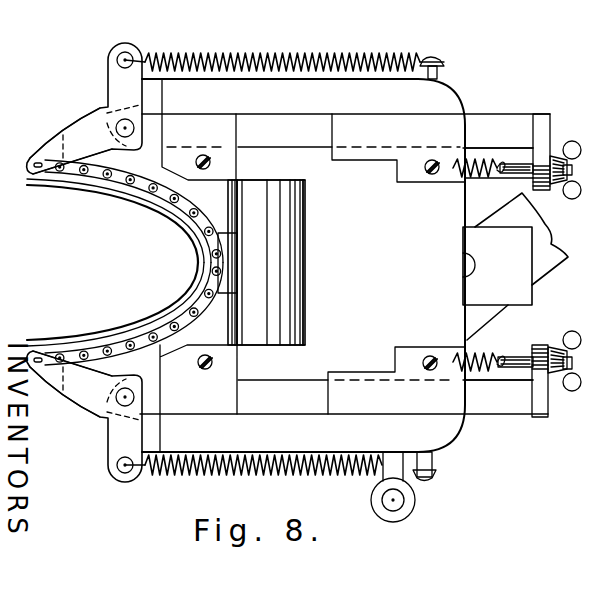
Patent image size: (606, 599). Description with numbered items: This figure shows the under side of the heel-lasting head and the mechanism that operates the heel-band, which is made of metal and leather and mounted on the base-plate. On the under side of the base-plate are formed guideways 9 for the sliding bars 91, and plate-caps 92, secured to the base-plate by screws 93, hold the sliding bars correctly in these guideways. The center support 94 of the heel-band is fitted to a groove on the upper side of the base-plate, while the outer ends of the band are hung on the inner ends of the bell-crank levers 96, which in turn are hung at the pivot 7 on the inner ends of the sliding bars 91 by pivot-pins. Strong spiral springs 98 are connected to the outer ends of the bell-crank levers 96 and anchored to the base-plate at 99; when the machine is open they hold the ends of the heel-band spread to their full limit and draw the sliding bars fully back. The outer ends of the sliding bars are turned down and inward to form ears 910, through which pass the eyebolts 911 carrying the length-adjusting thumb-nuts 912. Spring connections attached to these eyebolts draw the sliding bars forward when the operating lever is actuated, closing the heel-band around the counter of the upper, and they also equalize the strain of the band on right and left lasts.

The pivot of bell-crank levers 7 is at (206, 265).
The guideways 9 is at (298, 378).
The sliding bars 91 is at (440, 264).
The plate-caps 92 is at (350, 266).
The screws 93 is at (307, 266).
The center support of heel-band 94 is at (118, 127).
The bell-crank levers 96 is at (104, 126).
The spiral springs 98 is at (311, 267).
The spring attachment on base-plate 99 is at (433, 58).
The ears 910 is at (543, 153).
The eyebolts 911 is at (515, 264).
The length-adjusting thumb-nuts 912 is at (567, 266).